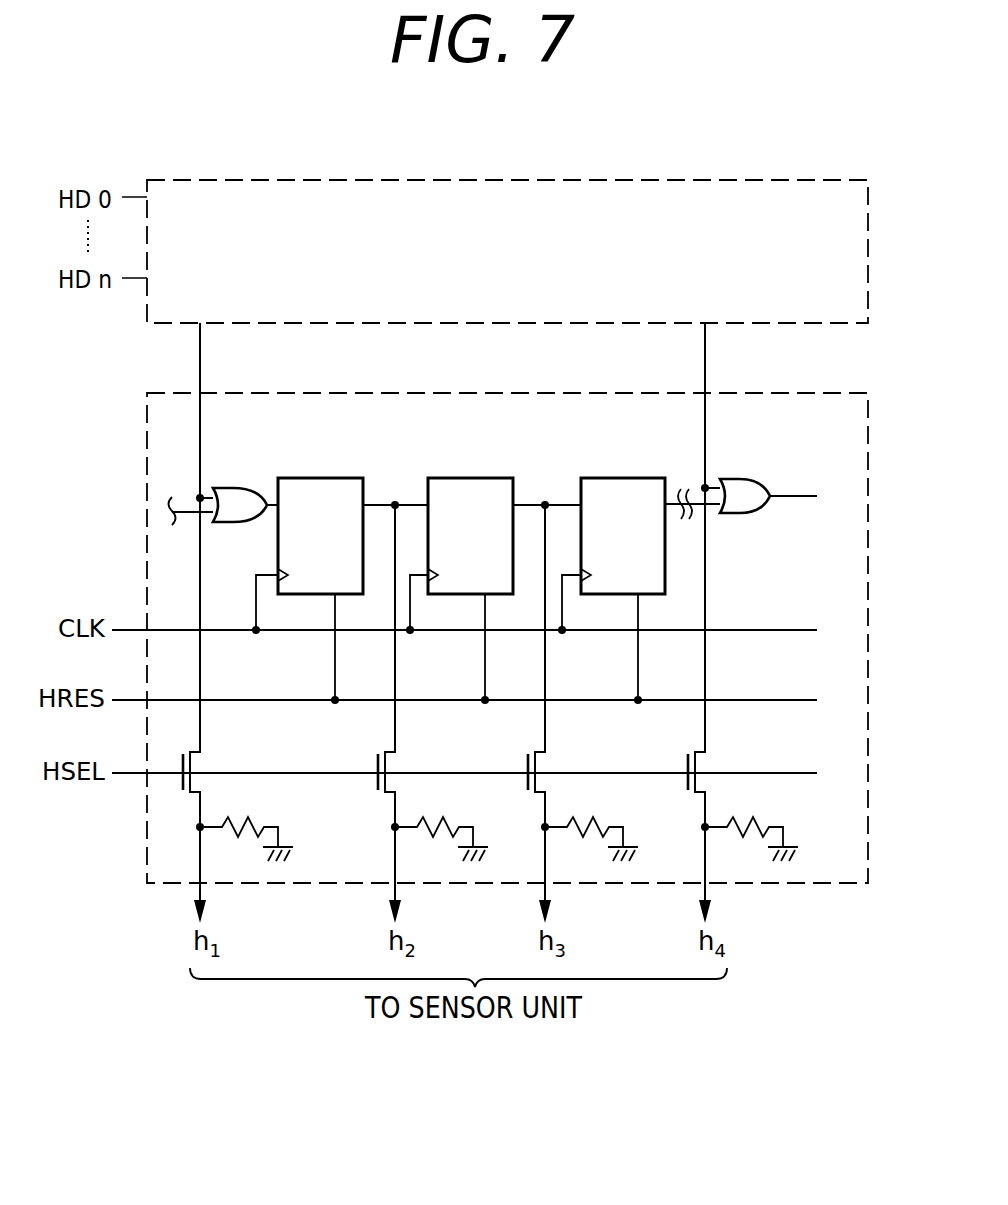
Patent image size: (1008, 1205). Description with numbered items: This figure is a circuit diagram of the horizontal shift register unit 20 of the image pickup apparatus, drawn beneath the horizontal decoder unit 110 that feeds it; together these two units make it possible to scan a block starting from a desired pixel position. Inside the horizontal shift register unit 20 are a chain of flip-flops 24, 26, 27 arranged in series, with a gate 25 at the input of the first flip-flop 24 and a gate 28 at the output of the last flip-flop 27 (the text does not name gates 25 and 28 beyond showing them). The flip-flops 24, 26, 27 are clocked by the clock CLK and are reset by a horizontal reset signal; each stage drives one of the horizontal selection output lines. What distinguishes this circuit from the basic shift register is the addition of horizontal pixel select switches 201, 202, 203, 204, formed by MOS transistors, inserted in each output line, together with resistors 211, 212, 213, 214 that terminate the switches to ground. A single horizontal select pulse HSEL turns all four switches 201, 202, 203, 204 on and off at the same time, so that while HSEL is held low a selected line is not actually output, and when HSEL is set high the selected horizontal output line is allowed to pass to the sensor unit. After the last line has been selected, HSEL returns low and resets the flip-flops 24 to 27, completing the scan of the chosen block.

The horizontal decoder unit 110 is at (515, 179).
The horizontal shift register unit 20 is at (433, 392).
The flip-flop 24 is at (311, 478).
The OR gate 25 is at (253, 489).
The flip-flop 26 is at (460, 478).
The flip-flop 27 is at (614, 478).
The OR gate 28 is at (762, 480).
The horizontal pixel select switch 201 is at (204, 765).
The horizontal pixel select switch 202 is at (399, 765).
The horizontal pixel select switch 203 is at (549, 765).
The horizontal pixel select switch 204 is at (710, 765).
The resistor 211 is at (239, 819).
The resistor 212 is at (434, 819).
The resistor 213 is at (584, 819).
The resistor 214 is at (743, 819).